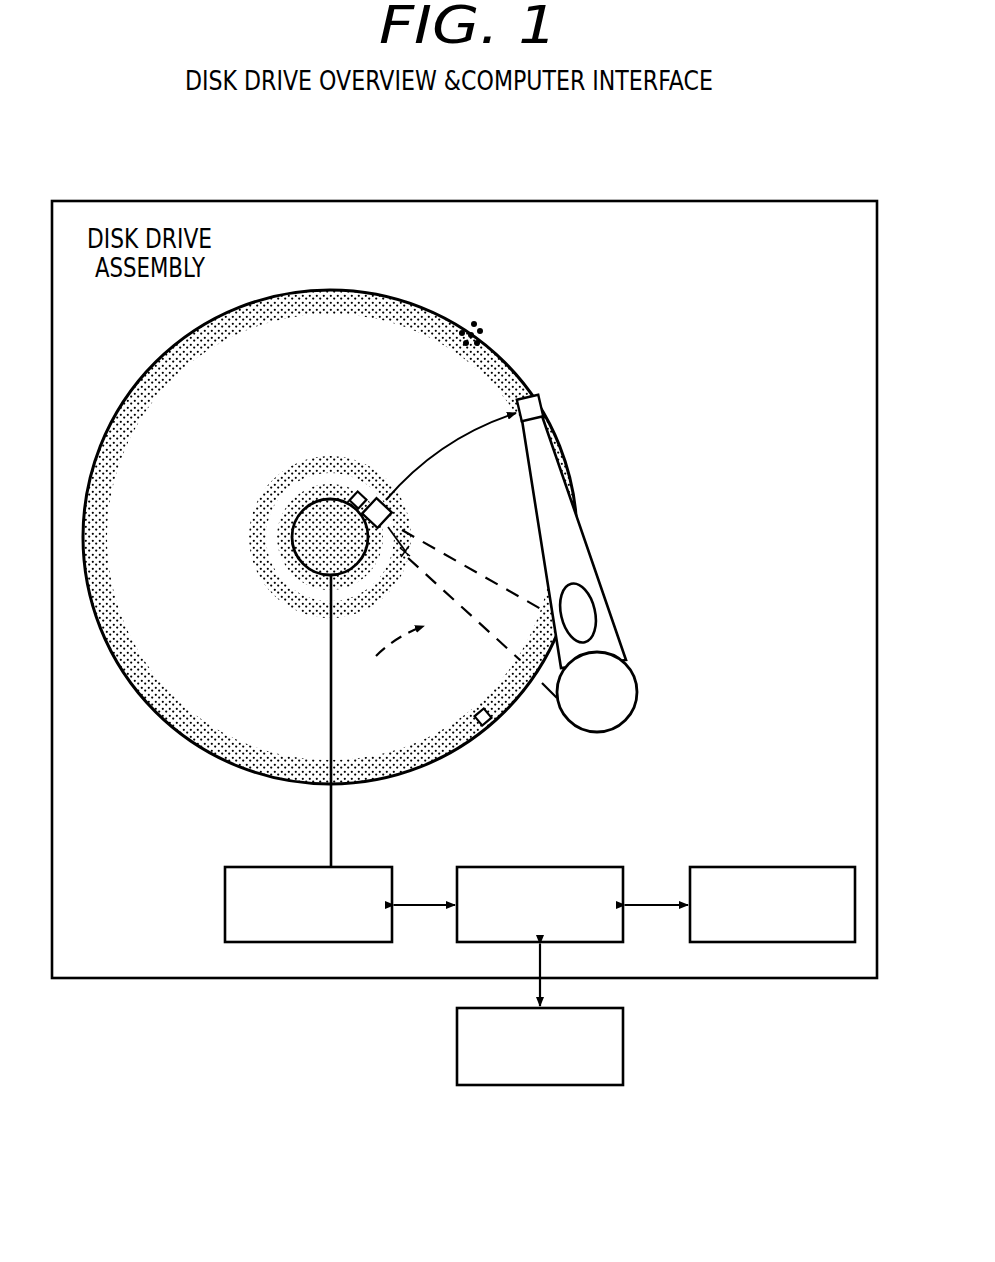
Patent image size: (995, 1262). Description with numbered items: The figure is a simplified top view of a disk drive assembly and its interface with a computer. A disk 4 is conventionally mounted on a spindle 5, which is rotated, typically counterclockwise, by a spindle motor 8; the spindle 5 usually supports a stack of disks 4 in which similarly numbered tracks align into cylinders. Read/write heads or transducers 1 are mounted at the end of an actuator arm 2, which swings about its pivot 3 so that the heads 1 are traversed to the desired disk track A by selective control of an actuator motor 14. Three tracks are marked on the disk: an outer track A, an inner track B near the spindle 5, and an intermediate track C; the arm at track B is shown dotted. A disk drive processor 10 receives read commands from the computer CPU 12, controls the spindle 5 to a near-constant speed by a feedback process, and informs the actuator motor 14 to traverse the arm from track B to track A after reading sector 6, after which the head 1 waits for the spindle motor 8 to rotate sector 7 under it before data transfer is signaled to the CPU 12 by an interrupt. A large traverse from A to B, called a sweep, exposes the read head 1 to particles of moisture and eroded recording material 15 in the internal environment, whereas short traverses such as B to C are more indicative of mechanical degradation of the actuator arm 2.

The read/write head 1 is at (542, 403).
The actuator arm 2 is at (575, 548).
The actuator pivot 3 is at (617, 687).
The disk 4 is at (330, 537).
The spindle 5 is at (333, 549).
The sector 6 is at (366, 492).
The sector 7 is at (483, 723).
The spindle motor 8 is at (353, 866).
The disk drive processor 10 is at (580, 866).
The computer CPU 12 is at (457, 1040).
The actuator motor 14 is at (800, 864).
The particles of moisture and eroded recording material 15 is at (493, 326).
The track A is at (160, 364).
The track B is at (308, 498).
The track C is at (263, 510).